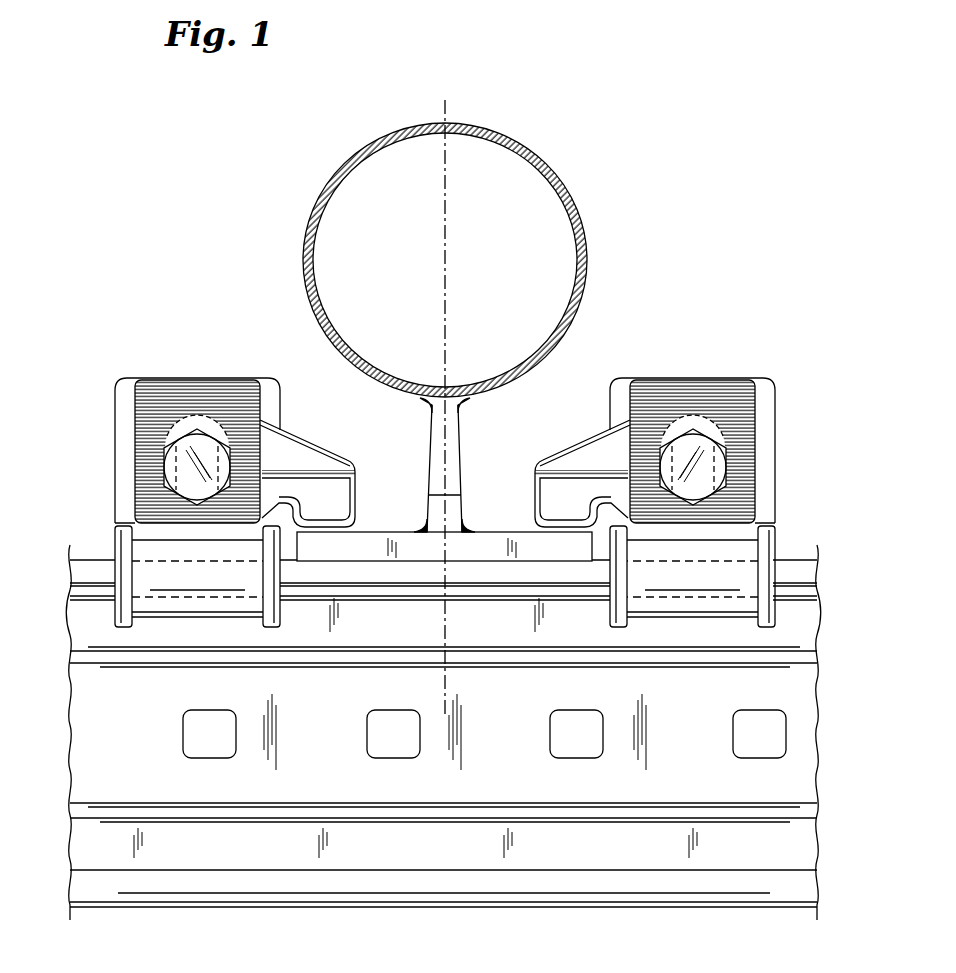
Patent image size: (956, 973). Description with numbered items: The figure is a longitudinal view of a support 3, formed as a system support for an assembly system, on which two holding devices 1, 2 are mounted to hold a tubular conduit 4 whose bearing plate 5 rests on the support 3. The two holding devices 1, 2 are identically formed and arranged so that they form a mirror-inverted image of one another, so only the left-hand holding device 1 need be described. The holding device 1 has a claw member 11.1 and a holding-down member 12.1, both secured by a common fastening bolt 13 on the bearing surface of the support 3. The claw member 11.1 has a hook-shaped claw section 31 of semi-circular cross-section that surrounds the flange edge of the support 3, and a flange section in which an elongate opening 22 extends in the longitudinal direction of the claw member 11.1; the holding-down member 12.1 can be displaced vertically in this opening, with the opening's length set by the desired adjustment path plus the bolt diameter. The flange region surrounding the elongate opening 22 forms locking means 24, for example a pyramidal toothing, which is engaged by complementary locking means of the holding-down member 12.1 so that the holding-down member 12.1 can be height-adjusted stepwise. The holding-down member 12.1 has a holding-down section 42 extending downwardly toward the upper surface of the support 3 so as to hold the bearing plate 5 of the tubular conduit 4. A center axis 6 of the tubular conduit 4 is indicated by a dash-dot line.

The holding device 1 is at (194, 400).
The holding device 2 is at (782, 345).
The support 3 is at (558, 878).
The tubular conduit 4 is at (575, 207).
The bearing plate 5 is at (496, 543).
The center axis 6 is at (445, 198).
The claw member 11.1 is at (160, 372).
The holding-down member 12.1 is at (320, 437).
The fastening bolt 13 is at (216, 455).
The elongate opening 22 is at (197, 412).
The locking means 24 is at (140, 398).
The claw section 31 is at (120, 548).
The holding-down section 42 is at (348, 500).